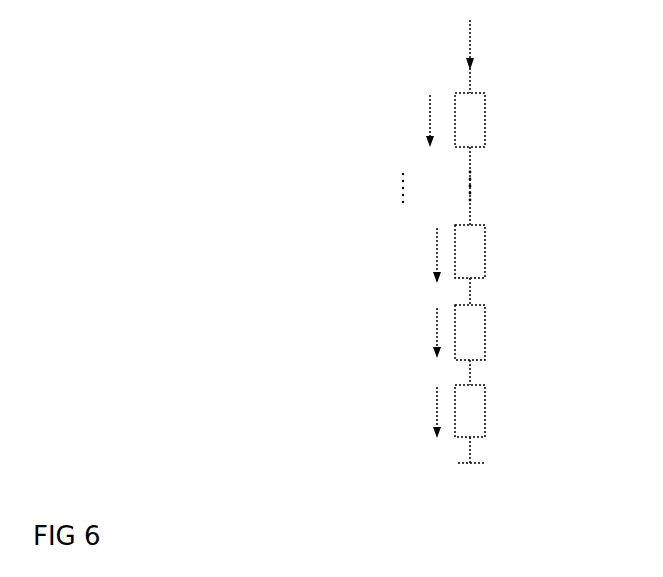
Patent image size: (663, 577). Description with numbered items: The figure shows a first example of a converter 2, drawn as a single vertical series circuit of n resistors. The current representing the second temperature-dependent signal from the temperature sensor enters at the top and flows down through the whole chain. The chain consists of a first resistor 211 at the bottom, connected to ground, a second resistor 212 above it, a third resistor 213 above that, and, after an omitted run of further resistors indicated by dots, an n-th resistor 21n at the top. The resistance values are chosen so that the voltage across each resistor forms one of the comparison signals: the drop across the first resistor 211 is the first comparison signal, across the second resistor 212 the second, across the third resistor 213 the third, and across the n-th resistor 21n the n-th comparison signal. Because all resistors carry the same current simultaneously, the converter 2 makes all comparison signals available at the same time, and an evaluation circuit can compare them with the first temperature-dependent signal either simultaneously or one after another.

The converter 2 is at (478, 241).
The n-th resistor 21n is at (485, 128).
The third resistor 213 is at (485, 256).
The second resistor 212 is at (485, 339).
The first resistor 211 is at (485, 415).